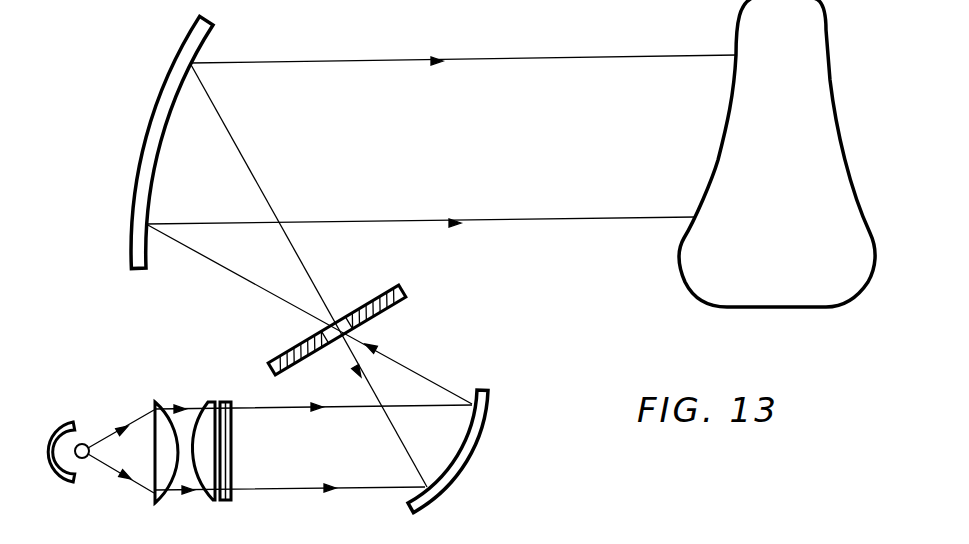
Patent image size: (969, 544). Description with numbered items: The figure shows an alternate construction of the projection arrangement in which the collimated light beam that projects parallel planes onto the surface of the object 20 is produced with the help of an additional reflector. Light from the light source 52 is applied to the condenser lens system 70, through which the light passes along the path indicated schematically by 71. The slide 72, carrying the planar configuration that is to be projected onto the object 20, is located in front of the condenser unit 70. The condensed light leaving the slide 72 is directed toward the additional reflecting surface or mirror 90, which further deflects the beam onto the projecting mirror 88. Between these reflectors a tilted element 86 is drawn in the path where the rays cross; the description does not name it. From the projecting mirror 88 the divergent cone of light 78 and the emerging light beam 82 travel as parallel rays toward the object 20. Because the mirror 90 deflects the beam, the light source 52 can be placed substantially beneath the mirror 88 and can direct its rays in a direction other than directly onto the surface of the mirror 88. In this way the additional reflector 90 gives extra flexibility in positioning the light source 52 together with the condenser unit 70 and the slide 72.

The object 20 is at (786, 223).
The light source 52 is at (89, 441).
The condenser lens system 70 is at (186, 434).
The light path 71 is at (173, 493).
The slide 72 is at (214, 429).
The divergent cone of light 78 is at (238, 152).
The emerging light beam 82 is at (333, 60).
The beam splitter 86 is at (398, 288).
The projecting mirror 88 is at (183, 41).
The additional reflecting mirror 90 is at (478, 443).